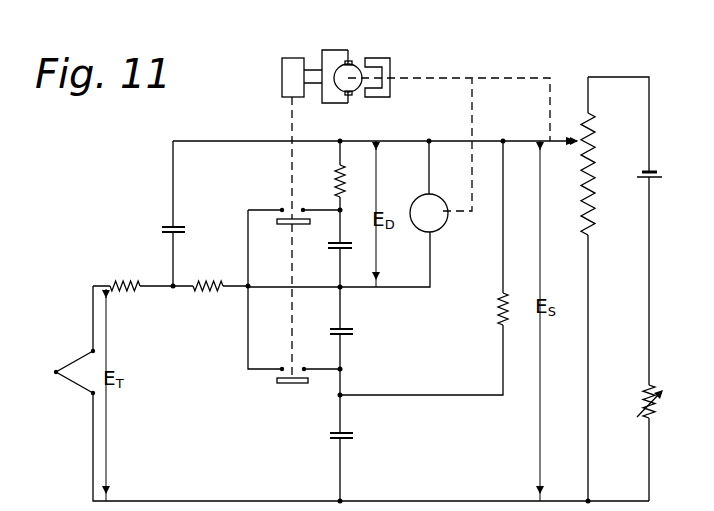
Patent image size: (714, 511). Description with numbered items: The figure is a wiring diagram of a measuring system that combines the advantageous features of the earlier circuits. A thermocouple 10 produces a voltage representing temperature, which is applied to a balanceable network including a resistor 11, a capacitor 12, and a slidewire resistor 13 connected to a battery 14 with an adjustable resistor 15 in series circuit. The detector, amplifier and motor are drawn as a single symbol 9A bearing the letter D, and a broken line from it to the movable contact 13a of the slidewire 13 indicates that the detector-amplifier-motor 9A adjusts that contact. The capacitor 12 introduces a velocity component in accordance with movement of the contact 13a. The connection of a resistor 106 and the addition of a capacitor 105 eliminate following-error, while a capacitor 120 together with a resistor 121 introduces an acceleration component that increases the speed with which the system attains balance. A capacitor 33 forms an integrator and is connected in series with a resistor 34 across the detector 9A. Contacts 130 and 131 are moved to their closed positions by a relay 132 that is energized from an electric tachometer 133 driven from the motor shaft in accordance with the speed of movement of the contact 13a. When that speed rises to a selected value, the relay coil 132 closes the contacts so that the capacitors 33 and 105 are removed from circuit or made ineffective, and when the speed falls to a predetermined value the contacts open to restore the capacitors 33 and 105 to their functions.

The thermocouple 10 is at (68, 382).
The resistor 11 is at (123, 288).
The capacitor 12 is at (355, 435).
The slidewire resistor 13 is at (595, 212).
The movable contact 13a is at (568, 143).
The battery 14 is at (658, 173).
The adjustable resistor 15 is at (667, 407).
The capacitor 33 is at (335, 245).
The resistor 34 is at (337, 178).
The detector-amplifier-motor 9A is at (443, 226).
The capacitor 105 is at (355, 332).
The resistor 106 is at (498, 308).
The capacitor 120 is at (160, 228).
The resistor 121 is at (205, 292).
The contact 130 is at (287, 387).
The contact 131 is at (285, 225).
The relay 132 is at (282, 72).
The electric tachometer 133 is at (353, 62).